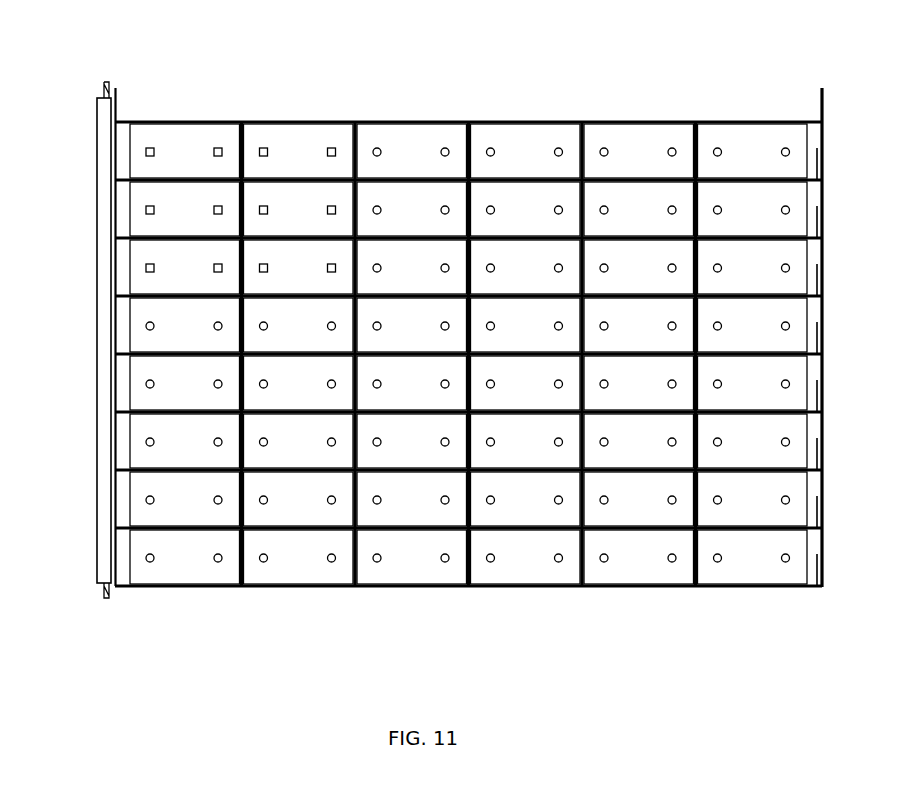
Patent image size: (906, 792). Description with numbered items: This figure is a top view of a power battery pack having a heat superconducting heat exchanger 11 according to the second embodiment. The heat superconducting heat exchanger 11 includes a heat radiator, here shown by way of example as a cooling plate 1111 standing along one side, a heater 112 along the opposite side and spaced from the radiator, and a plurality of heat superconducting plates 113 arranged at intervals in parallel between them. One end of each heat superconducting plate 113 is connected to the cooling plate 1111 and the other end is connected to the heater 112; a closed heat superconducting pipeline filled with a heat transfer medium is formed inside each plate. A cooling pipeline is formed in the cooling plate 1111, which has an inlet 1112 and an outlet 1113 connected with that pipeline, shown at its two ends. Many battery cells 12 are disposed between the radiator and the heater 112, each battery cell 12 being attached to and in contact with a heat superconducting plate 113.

The heat superconducting heat exchanger 11 is at (790, 657).
The battery cell 12 is at (527, 147).
The heater 112 is at (820, 538).
The heat superconducting plate 113 is at (360, 587).
The cooling plate 1111 is at (103, 545).
The inlet 1112 is at (105, 86).
The outlet 1113 is at (110, 597).